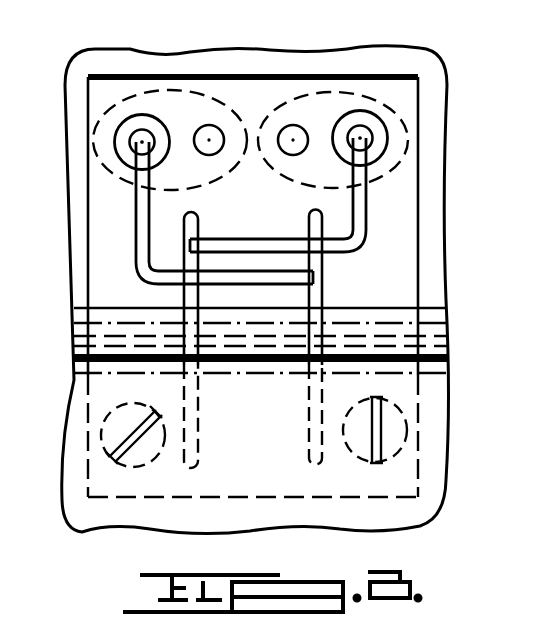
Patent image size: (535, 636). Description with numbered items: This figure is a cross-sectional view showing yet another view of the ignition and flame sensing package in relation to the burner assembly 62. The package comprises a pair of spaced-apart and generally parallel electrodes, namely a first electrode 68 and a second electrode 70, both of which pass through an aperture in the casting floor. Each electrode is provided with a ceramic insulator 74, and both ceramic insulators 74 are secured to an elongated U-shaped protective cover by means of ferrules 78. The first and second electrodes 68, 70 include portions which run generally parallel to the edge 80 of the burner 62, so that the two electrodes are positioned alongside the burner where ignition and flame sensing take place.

The burner assembly 62 is at (238, 449).
The first electrode 68 is at (241, 243).
The second electrode 70 is at (314, 281).
The ceramic insulators 74 is at (127, 139).
The ferrules 78 is at (398, 174).
The edge 80 is at (110, 306).